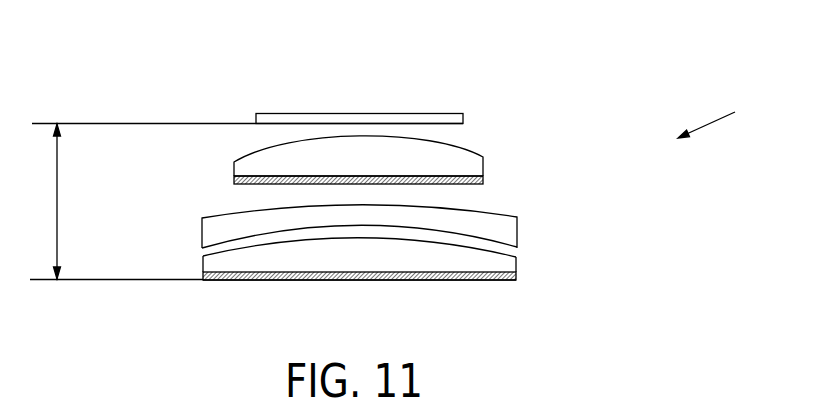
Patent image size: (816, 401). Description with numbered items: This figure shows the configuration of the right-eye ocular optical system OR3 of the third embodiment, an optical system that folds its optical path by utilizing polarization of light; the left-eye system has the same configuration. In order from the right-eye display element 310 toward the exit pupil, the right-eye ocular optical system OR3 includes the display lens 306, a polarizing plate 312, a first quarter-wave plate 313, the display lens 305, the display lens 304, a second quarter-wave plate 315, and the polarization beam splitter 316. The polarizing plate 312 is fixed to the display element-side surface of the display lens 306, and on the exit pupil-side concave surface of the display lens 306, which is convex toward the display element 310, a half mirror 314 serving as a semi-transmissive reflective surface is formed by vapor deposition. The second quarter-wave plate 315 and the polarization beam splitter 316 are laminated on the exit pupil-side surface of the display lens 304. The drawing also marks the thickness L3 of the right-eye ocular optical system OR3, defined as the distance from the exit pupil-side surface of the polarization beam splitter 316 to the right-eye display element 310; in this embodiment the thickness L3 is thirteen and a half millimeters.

The right-eye display element 310 is at (397, 117).
The display lens 306 is at (445, 169).
The polarizing plate 312 is at (486, 178).
The first λ/4 plate 313 is at (486, 183).
The display lens 305 is at (518, 225).
The half mirror 314 is at (240, 238).
The display lens 304 is at (497, 262).
The second λ/4 plate 315 is at (203, 272).
The polarization beam splitter 316 is at (213, 282).
The thickness of the right-eye ocular optical system L3 is at (43, 201).
The right-eye ocular optical system OR3 is at (724, 109).